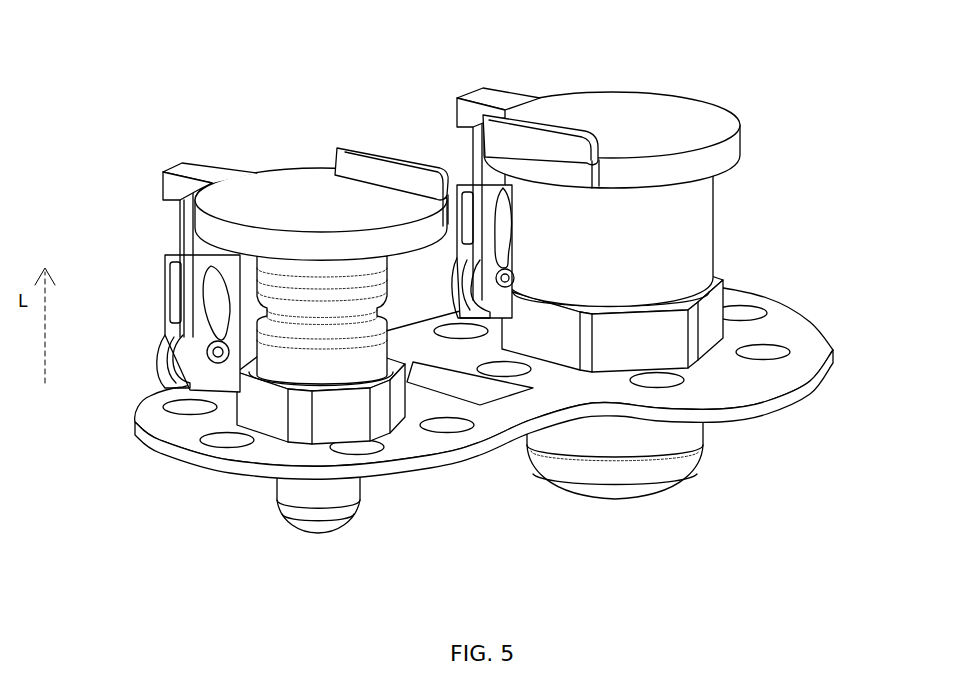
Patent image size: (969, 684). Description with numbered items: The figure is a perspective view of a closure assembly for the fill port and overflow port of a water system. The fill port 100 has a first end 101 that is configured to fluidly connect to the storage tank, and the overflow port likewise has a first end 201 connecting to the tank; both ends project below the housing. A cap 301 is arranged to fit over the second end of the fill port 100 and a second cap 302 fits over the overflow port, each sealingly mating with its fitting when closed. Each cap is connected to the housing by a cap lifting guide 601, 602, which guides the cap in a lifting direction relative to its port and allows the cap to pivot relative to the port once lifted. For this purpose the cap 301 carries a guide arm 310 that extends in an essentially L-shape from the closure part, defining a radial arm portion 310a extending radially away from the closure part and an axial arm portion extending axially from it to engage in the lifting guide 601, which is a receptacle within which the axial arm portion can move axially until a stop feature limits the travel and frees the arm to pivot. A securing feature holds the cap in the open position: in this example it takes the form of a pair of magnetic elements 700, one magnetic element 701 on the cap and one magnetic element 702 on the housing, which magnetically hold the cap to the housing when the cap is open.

The fill port 100 is at (267, 413).
The first end of the fill port 101 is at (345, 518).
The first end of the overflow port 201 is at (633, 500).
The cap 301 is at (250, 205).
The cap 302 is at (693, 122).
The guide arm 310 is at (205, 246).
The radial arm portion 310a is at (198, 172).
The cap lifting guide 601 is at (173, 363).
The cap lifting guide 602 is at (460, 160).
The magnetic elements 700 is at (498, 392).
The magnetic element 701 is at (352, 158).
The magnetic element 702 is at (507, 108).